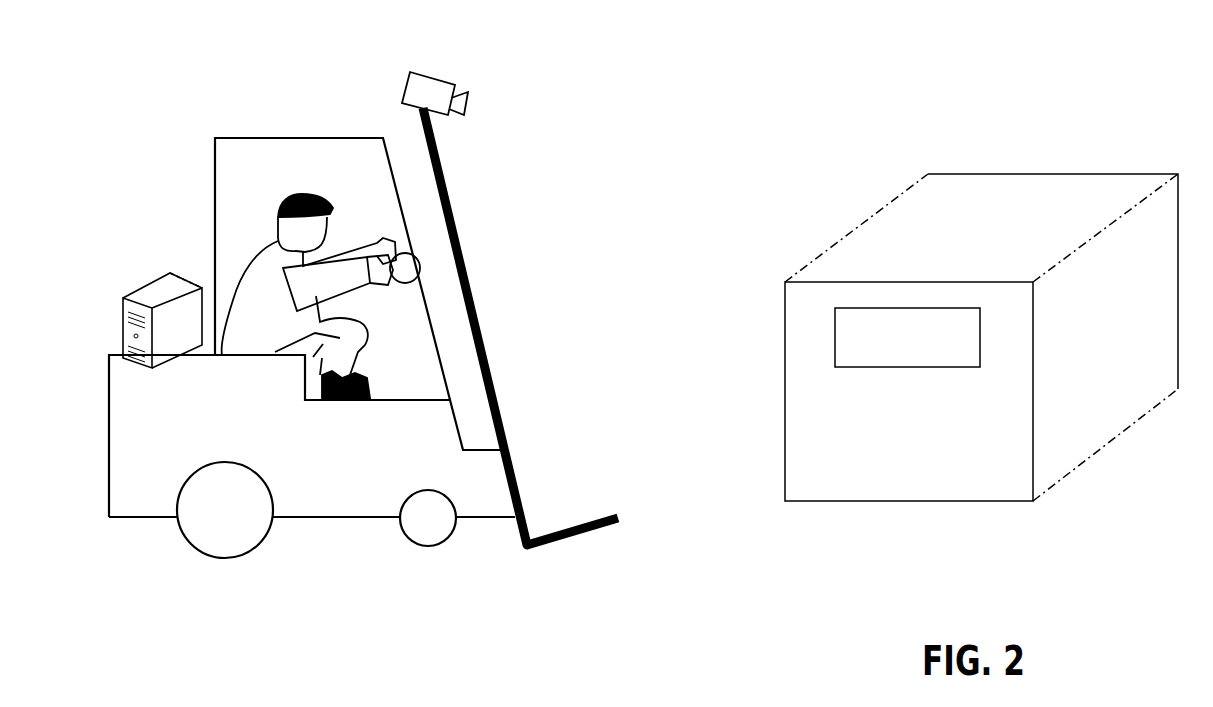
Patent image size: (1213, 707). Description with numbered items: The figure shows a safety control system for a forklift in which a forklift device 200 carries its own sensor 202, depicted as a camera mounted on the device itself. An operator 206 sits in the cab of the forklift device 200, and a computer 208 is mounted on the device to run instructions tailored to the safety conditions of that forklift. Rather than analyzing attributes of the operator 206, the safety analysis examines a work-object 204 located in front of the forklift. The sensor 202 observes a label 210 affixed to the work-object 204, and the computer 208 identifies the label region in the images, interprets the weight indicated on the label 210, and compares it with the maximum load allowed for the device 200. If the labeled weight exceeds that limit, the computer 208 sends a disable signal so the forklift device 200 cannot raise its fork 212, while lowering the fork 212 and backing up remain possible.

The forklift device 200 is at (360, 520).
The sensor 202 is at (423, 72).
The work-object 204 is at (1050, 174).
The operator 206 is at (265, 243).
The computer 208 is at (122, 310).
The label 210 is at (860, 308).
The fork 212 is at (633, 588).